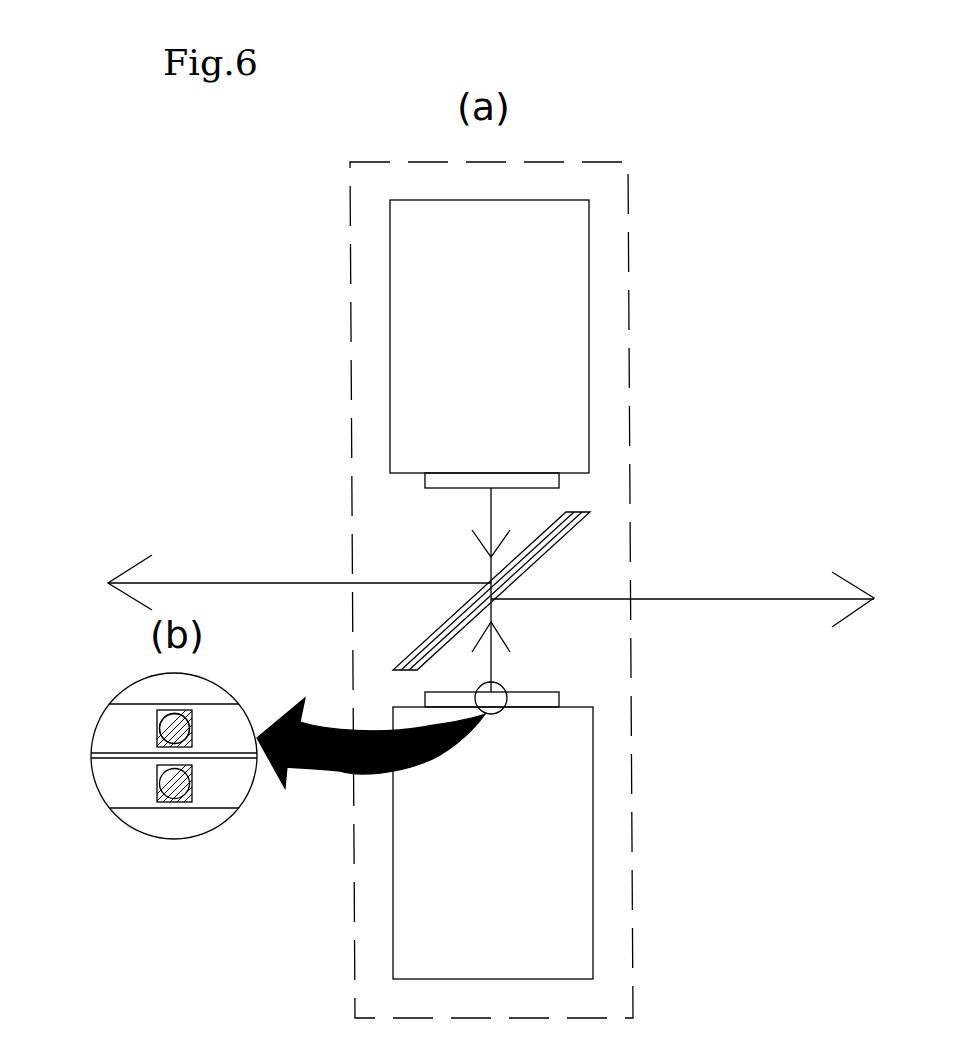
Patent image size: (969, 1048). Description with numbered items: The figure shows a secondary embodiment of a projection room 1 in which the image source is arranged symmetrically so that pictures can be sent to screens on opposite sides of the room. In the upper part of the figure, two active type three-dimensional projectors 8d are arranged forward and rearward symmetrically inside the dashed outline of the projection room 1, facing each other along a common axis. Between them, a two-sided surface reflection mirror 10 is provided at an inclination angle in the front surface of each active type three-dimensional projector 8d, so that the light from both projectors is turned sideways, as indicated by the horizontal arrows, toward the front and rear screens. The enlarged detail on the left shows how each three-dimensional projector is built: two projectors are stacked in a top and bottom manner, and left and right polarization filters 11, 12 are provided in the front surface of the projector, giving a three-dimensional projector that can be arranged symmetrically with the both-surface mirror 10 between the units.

The projection room 1 is at (628, 191).
The active type 3D projector 8d is at (582, 336).
The two-sided surface reflection mirror 10 is at (590, 512).
The left polarization filter 11 is at (188, 710).
The right polarization filter 12 is at (195, 797).